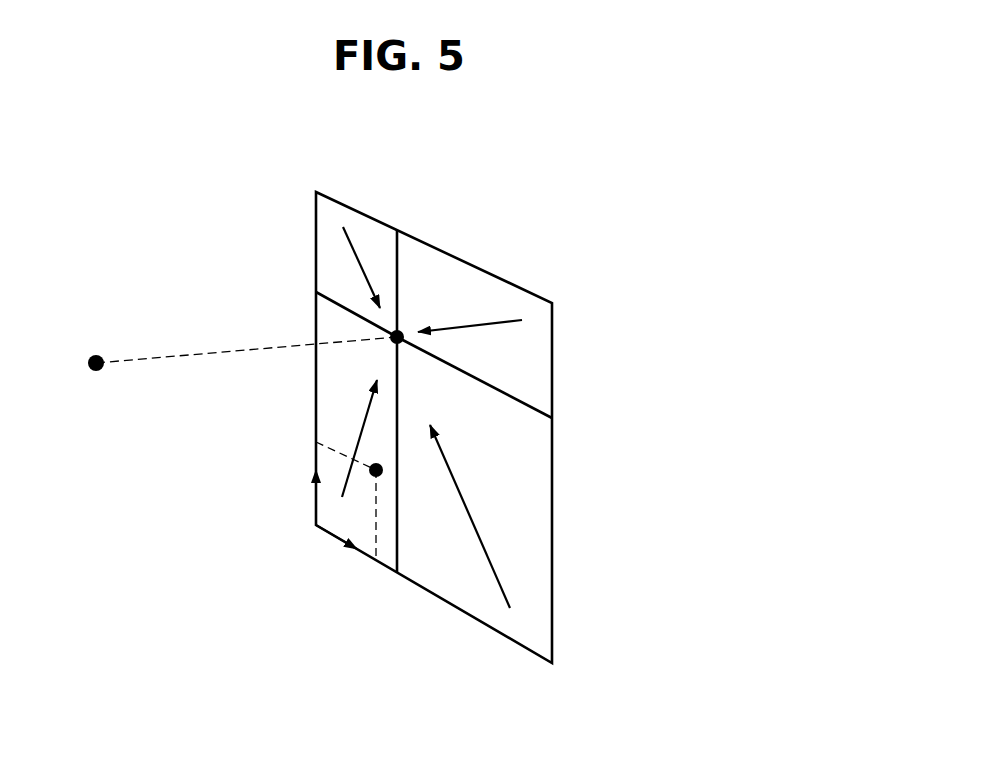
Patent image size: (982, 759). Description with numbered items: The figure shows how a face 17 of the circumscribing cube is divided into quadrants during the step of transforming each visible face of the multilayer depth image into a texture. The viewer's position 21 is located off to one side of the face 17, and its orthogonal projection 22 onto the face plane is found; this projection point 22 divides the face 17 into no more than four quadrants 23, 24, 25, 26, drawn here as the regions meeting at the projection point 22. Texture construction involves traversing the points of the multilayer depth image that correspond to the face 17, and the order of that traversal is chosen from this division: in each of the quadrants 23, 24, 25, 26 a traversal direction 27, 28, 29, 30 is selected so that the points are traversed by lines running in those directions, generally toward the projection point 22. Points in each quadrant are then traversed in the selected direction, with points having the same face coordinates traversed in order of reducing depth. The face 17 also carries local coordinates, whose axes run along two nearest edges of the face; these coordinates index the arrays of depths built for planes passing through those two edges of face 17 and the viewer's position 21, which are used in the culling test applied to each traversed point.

The face 17 is at (552, 392).
The viewer's position 21 is at (96, 356).
The orthogonal projection of the viewer's position point 22 is at (397, 337).
The quadrant 23 is at (327, 258).
The quadrant 24 is at (535, 337).
The quadrant 25 is at (540, 472).
The quadrant 26 is at (332, 514).
The traversal direction 27 is at (355, 253).
The traversal direction 28 is at (485, 323).
The traversal direction 29 is at (477, 530).
The traversal direction 30 is at (364, 416).